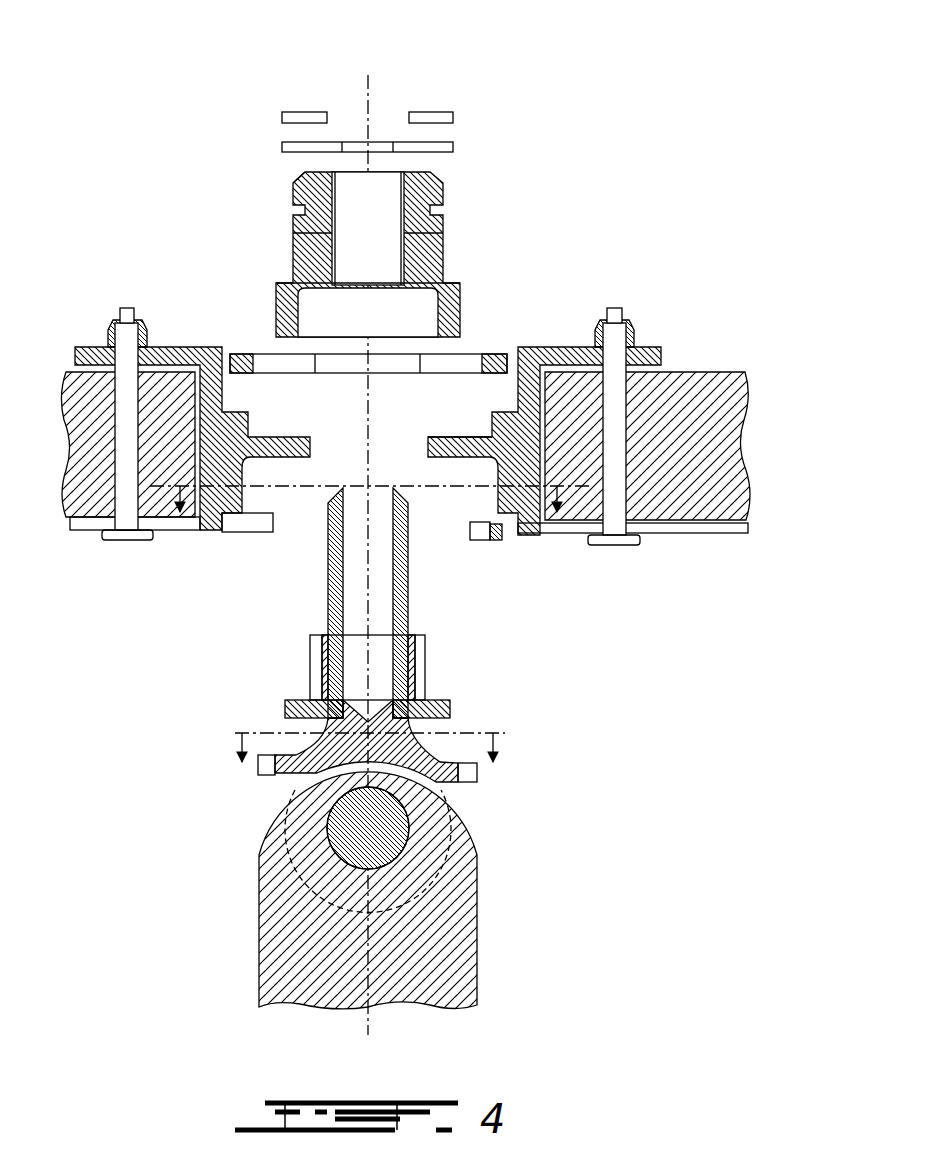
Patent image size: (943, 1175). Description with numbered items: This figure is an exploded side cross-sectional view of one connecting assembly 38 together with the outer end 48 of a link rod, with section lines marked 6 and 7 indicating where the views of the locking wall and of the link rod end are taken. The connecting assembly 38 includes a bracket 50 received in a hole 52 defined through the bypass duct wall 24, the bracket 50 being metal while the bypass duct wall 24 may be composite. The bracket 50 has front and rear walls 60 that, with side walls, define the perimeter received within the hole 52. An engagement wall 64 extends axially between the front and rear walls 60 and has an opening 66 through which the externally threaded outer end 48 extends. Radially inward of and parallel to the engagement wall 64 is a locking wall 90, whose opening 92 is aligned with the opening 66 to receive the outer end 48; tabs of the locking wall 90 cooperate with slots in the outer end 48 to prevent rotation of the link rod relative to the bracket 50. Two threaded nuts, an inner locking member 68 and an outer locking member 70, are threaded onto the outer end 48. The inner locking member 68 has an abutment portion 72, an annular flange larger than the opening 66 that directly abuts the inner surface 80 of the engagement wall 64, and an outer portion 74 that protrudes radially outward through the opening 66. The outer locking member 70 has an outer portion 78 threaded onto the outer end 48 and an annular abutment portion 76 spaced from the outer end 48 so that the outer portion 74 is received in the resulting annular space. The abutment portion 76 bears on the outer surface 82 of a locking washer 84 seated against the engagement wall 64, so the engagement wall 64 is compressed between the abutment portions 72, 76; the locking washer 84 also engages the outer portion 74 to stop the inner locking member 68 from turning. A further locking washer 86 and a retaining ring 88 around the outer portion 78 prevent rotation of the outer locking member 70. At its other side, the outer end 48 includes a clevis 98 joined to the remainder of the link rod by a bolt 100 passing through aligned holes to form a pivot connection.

The bypass duct wall 24 is at (718, 452).
The connecting assembly 38 is at (188, 162).
The outer end 48 is at (458, 770).
The bracket 50 is at (588, 415).
The hole 52 is at (537, 503).
The front and rear walls 60 is at (218, 400).
The engagement wall 64 is at (456, 437).
The opening 66 is at (370, 584).
The inner locking member 68 is at (373, 667).
The outer locking member 70 is at (387, 221).
The abutment portion 72 is at (290, 700).
The outer portion 74 is at (332, 650).
The abutment portion 76 is at (274, 288).
The outer portion 78 is at (293, 183).
The inner surface 80 is at (275, 513).
The outer surface 82 is at (281, 297).
The locking washer 84 is at (243, 354).
The locking washer 86 is at (452, 147).
The retaining ring 88 is at (433, 112).
The locking wall 90 is at (497, 536).
The opening 92 is at (433, 527).
The clevis 98 is at (410, 880).
The bolt 100 is at (394, 830).
The section line 6- 6 is at (369, 495).
The section line 7- 7 is at (366, 734).